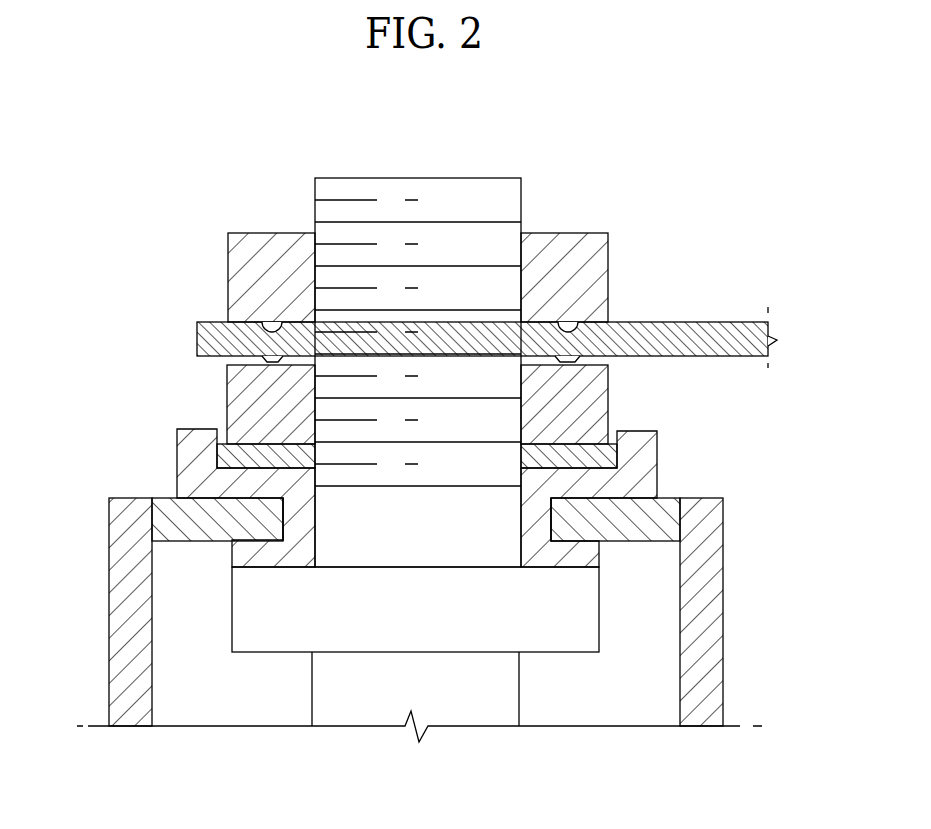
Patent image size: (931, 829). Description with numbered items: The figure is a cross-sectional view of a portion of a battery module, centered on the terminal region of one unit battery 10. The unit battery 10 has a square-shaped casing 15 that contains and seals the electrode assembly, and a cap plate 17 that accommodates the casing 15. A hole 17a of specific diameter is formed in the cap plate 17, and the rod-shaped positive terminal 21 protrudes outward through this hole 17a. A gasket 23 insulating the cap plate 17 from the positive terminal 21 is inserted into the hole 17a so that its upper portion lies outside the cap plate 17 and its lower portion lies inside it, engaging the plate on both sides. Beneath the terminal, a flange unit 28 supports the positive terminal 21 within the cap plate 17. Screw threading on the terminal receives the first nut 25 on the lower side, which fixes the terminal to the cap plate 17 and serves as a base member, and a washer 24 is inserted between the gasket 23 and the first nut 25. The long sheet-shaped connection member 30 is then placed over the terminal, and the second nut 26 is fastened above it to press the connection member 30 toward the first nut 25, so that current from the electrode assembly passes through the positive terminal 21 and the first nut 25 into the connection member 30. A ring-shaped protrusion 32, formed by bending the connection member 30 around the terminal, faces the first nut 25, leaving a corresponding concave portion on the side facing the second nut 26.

The unit battery 10 is at (434, 456).
The casing 15 is at (122, 595).
The cap plate 17 is at (167, 508).
The hole 17a is at (296, 530).
The positive terminal 21 is at (462, 178).
The gasket 23 is at (643, 472).
The washer 24 is at (640, 457).
The first nut 25 is at (600, 392).
The second nut 26 is at (600, 278).
The flange unit 28 is at (600, 628).
The connection member 30 is at (712, 340).
The protrusion 32 is at (243, 383).